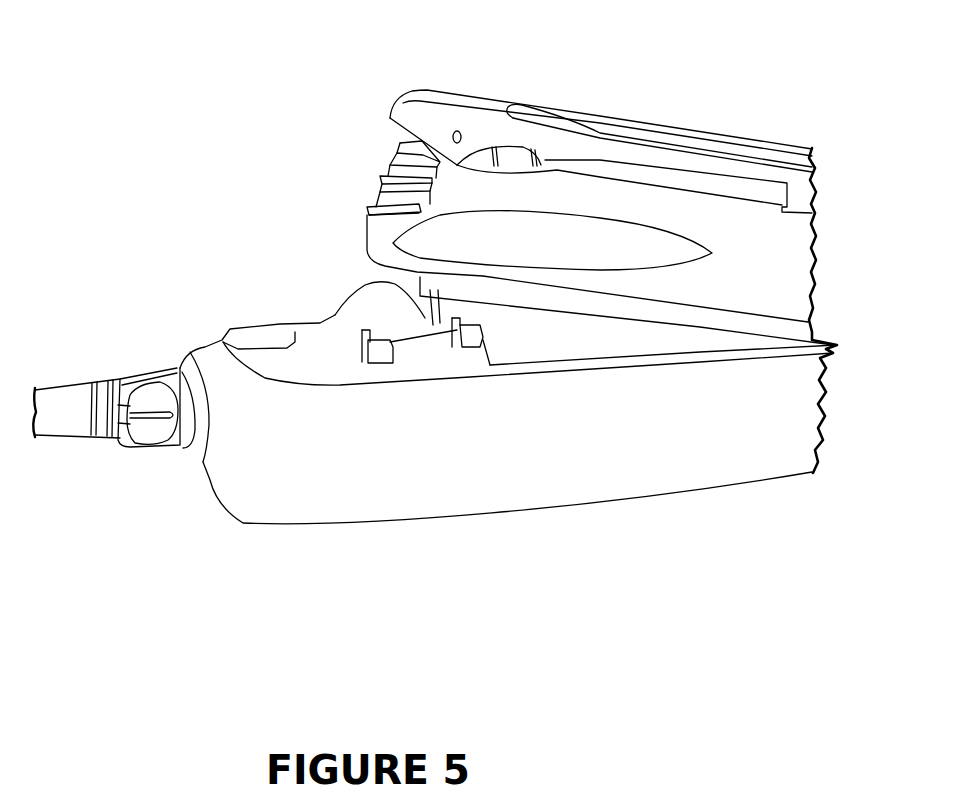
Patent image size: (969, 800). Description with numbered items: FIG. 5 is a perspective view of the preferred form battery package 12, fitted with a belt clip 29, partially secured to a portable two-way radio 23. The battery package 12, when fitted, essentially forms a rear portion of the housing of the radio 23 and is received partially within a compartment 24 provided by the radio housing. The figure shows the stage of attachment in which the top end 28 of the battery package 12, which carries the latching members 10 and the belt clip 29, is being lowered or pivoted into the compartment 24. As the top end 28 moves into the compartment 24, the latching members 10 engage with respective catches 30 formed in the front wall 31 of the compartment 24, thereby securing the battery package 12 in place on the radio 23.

The latching members 10 is at (392, 172).
The battery package 12 is at (657, 275).
The radio 23 is at (293, 526).
The compartment 24 is at (593, 358).
The top end 28 is at (365, 216).
The belt clip 29 is at (503, 133).
The catches 30 is at (469, 361).
The front wall 31 is at (385, 298).